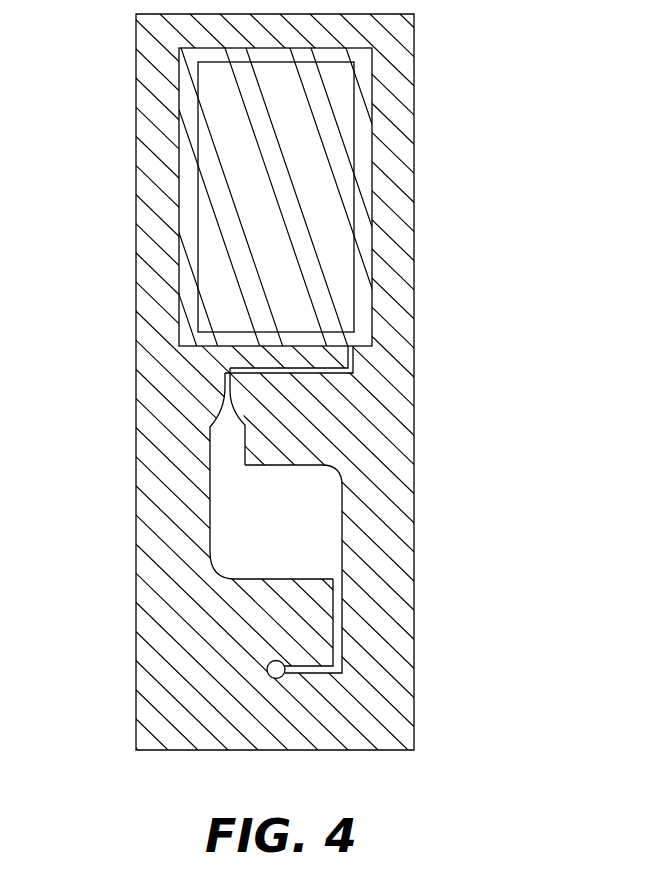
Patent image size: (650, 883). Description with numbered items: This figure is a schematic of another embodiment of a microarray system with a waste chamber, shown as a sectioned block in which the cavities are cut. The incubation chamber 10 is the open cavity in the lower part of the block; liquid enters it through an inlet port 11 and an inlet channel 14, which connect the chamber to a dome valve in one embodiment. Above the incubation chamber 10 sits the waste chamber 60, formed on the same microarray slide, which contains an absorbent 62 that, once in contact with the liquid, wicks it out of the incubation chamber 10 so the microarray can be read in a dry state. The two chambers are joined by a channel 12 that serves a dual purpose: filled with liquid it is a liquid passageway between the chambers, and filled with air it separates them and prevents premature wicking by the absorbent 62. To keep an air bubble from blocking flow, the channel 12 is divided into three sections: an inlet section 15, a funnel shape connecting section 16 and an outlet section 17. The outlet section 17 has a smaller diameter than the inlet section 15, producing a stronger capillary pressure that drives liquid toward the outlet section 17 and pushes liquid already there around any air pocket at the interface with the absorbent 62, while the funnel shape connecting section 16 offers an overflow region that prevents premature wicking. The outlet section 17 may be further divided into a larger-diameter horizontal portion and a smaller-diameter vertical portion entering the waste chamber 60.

The incubation chamber 10 is at (327, 543).
The inlet port 11 is at (267, 663).
The channel 12 is at (296, 381).
The inlet channel 14 is at (343, 620).
The inlet section 15 is at (220, 443).
The funnel shape connecting section 16 is at (224, 412).
The outlet section 17 is at (252, 352).
The waste chamber 60 is at (366, 122).
The absorbent 62 is at (330, 218).